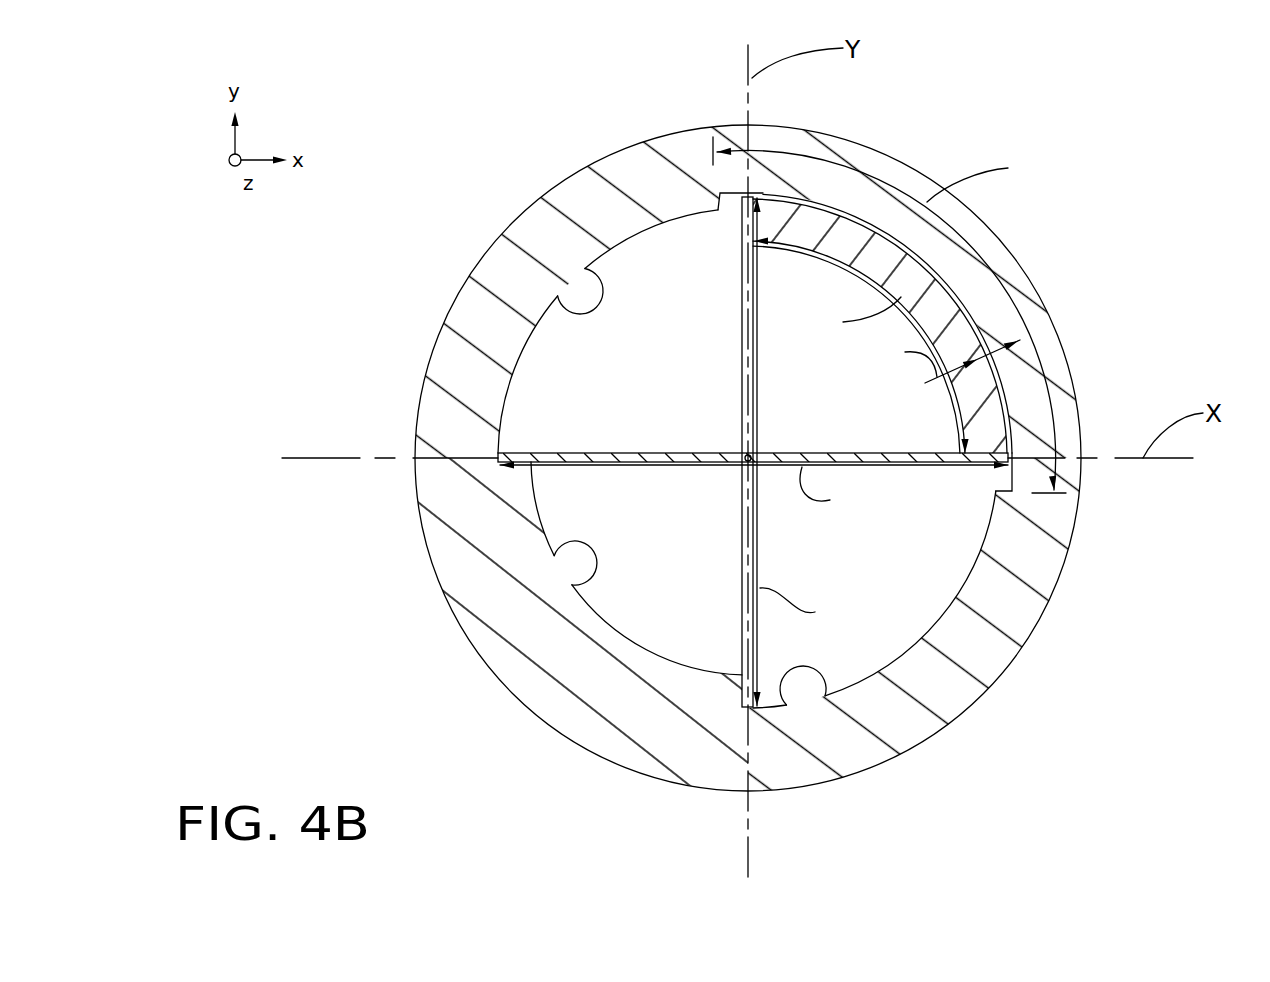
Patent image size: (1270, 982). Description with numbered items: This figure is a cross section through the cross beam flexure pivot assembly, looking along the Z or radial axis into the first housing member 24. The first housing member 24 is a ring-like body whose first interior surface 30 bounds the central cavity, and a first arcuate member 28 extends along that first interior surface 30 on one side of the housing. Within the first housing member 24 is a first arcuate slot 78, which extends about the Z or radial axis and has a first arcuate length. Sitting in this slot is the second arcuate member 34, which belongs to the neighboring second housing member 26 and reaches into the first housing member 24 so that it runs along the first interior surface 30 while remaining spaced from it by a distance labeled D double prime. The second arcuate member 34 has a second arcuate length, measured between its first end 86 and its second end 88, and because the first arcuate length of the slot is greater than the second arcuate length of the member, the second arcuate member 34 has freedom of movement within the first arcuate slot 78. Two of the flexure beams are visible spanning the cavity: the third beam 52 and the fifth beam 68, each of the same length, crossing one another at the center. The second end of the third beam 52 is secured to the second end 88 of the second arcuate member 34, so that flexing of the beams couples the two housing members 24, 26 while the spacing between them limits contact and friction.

The first housing member 24 is at (573, 185).
The second housing member 26 is at (946, 291).
The first arcuate member 28 is at (565, 546).
The first interior surface 30 is at (583, 314).
The second arcuate member 34 is at (965, 240).
The third beam 52 is at (597, 452).
The fifth beam 68 is at (742, 378).
The first arcuate slot 78 is at (724, 224).
The first end 86 is at (765, 243).
The second end 88 is at (964, 446).